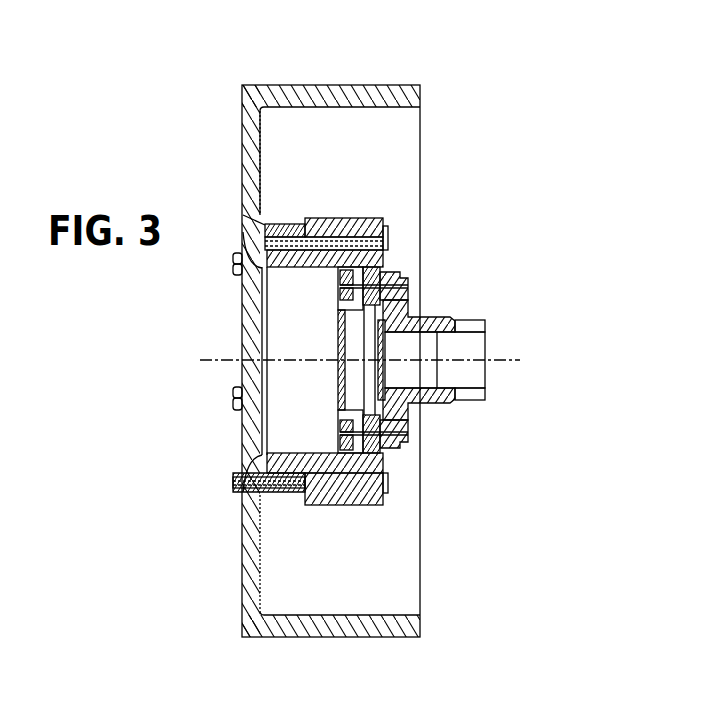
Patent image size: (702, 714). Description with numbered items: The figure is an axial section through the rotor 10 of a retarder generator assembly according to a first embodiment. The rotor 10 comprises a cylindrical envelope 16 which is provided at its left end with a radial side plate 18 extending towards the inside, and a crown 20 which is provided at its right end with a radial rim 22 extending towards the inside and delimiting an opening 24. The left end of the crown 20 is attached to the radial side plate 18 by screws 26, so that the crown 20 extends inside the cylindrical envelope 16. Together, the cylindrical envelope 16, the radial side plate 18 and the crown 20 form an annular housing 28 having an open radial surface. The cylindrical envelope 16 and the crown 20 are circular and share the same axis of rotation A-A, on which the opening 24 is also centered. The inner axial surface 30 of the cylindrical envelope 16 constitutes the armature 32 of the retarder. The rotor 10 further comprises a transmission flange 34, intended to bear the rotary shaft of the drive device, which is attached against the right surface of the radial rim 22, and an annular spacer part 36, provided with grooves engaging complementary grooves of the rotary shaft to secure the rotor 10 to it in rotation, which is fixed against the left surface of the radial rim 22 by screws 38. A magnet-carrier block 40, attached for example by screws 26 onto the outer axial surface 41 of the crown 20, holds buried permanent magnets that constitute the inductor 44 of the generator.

The rotor 10 is at (227, 643).
The cylindrical envelope 16 is at (408, 627).
The radial side plate 18 is at (241, 565).
The crown 20 is at (287, 274).
The radial rim 22 is at (383, 267).
The opening 24 is at (407, 420).
The screws 26 is at (383, 237).
The annular housing 28 is at (383, 140).
The inner axial surface 30 is at (297, 116).
The armature 32 is at (258, 604).
The transmission flange 34 is at (480, 398).
The spacer part 36 is at (355, 376).
The screws 38 is at (383, 287).
The magnet-carrier block 40 is at (357, 488).
The outer axial surface 41 is at (282, 227).
The inductor 44 is at (382, 218).